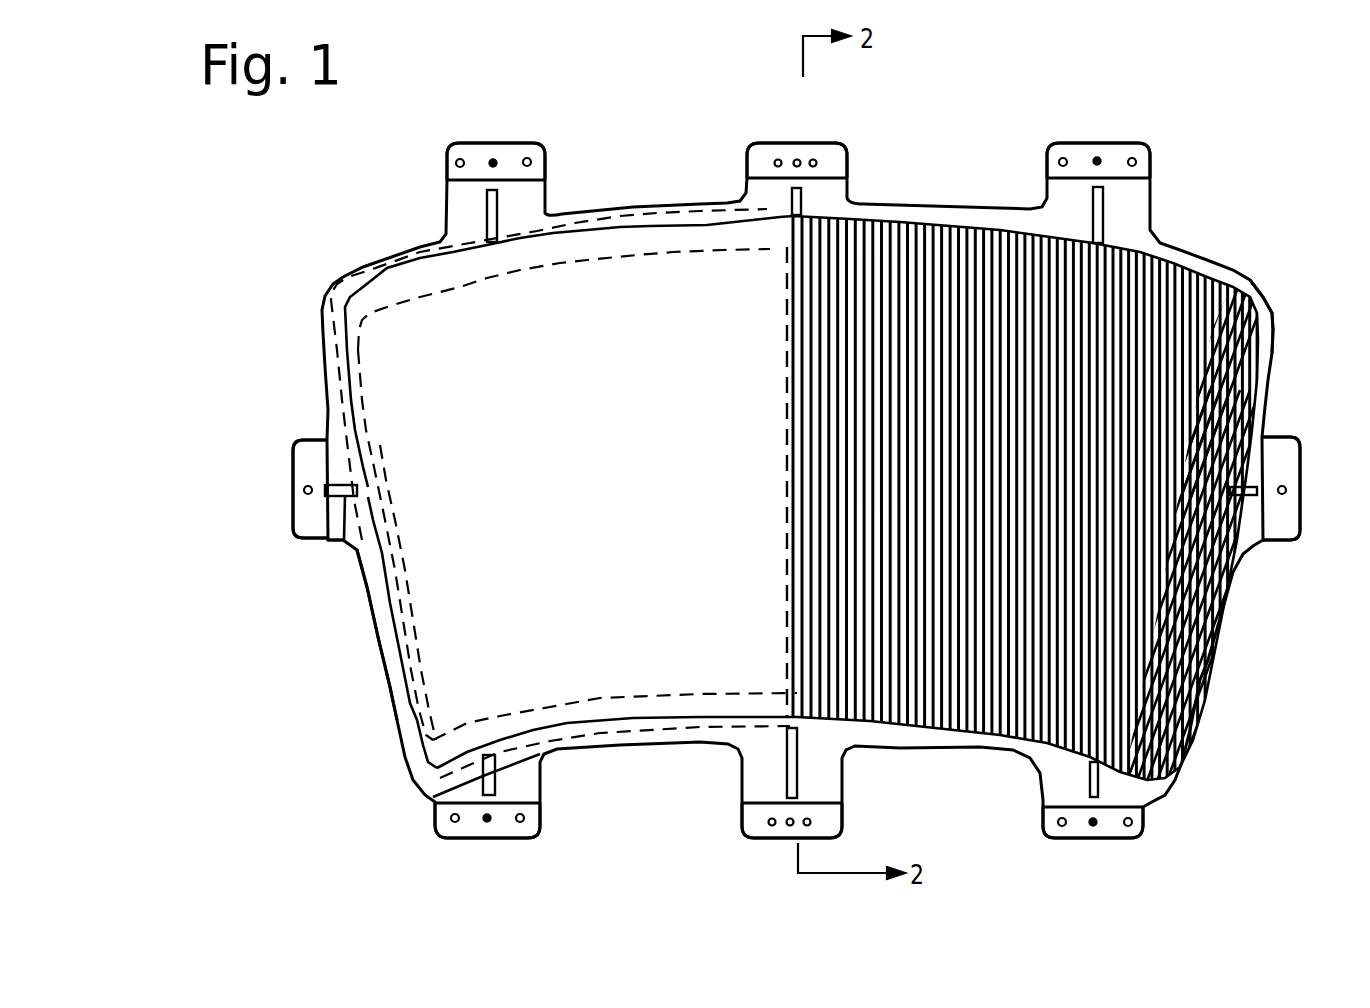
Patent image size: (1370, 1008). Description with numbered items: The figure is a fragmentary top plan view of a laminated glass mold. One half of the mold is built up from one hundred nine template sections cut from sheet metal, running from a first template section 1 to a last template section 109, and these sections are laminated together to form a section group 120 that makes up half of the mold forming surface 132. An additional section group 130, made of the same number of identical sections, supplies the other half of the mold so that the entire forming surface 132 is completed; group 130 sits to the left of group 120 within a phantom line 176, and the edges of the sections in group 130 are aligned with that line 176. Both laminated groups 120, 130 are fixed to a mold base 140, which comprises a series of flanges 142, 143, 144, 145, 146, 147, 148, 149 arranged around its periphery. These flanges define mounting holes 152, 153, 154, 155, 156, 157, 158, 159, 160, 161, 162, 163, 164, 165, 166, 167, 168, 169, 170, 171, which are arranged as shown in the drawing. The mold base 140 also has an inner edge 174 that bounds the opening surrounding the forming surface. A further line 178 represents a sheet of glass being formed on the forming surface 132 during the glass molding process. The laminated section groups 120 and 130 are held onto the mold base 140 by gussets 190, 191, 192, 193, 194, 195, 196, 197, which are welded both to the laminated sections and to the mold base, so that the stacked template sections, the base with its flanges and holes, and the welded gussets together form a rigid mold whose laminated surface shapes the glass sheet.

The template section 1 is at (787, 322).
The template section 109 is at (1267, 322).
The section group 120 is at (1248, 259).
The section group 130 is at (592, 449).
The mold forming surface 132 is at (1192, 381).
The mold base 140 is at (378, 641).
The flange 142 is at (440, 166).
The flange 143 is at (745, 163).
The flange 144 is at (1045, 166).
The flange 145 is at (1288, 542).
The flange 146 is at (1148, 822).
The flange 147 is at (845, 824).
The flange 148 is at (542, 822).
The flange 149 is at (305, 440).
The mounting hole 152 is at (459, 158).
The mounting hole 153 is at (492, 158).
The mounting hole 154 is at (531, 158).
The mounting hole 155 is at (778, 158).
The mounting hole 156 is at (797, 158).
The mounting hole 157 is at (815, 160).
The mounting hole 158 is at (1063, 158).
The mounting hole 159 is at (1097, 157).
The mounting hole 160 is at (1137, 160).
The mounting hole 161 is at (1283, 488).
The mounting hole 162 is at (1130, 828).
The mounting hole 163 is at (1093, 828).
The mounting hole 164 is at (1062, 828).
The mounting hole 165 is at (809, 828).
The mounting hole 166 is at (792, 820).
The mounting hole 167 is at (771, 828).
The mounting hole 168 is at (523, 824).
The mounting hole 169 is at (487, 824).
The mounting hole 170 is at (455, 824).
The mounting hole 171 is at (308, 496).
The inner edge 174 is at (589, 240).
The phantom line 176 is at (333, 274).
The line representing sheet of glass 178 is at (418, 549).
The gusset 190 is at (803, 197).
The gusset 191 is at (1103, 218).
The gusset 192 is at (1242, 497).
The gusset 193 is at (1100, 797).
The gusset 194 is at (783, 757).
The gusset 195 is at (432, 797).
The gusset 196 is at (345, 541).
The gusset 197 is at (487, 213).